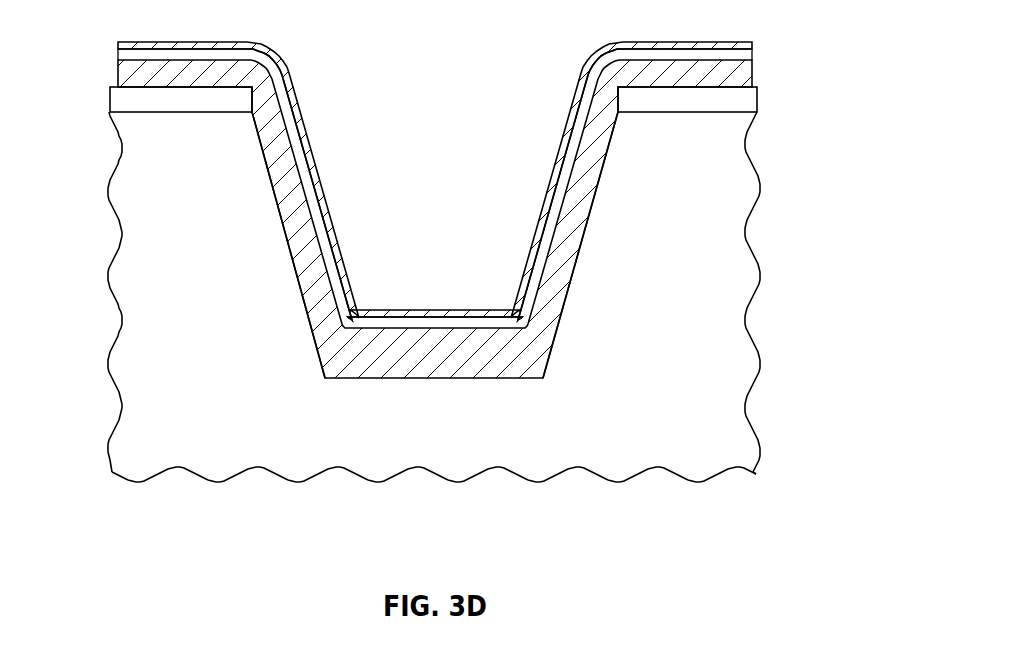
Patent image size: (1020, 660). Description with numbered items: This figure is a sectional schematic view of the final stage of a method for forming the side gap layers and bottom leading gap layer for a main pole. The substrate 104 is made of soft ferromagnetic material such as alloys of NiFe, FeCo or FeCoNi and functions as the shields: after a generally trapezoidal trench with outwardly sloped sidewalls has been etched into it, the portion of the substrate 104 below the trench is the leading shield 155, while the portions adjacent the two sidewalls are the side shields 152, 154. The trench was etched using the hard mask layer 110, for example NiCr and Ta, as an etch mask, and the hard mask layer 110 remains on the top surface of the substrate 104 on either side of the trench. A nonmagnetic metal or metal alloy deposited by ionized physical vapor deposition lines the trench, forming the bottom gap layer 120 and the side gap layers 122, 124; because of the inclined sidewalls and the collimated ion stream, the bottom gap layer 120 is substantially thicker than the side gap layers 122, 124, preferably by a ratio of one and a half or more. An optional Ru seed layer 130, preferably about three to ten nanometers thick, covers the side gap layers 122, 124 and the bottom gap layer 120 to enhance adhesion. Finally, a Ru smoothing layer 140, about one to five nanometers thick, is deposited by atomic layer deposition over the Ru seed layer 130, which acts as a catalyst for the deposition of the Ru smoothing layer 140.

The substrate 104 is at (435, 321).
The hard mask layer 110 is at (132, 103).
The bottom gap layer 120 is at (512, 360).
The side gap layer 122 is at (558, 297).
The side gap layer 124 is at (312, 296).
The Ru seed layer 130 is at (307, 176).
The Ru smoothing layer 140 is at (305, 117).
The side shield 152 is at (735, 202).
The side shield 154 is at (134, 203).
The leading shield 155 is at (370, 458).